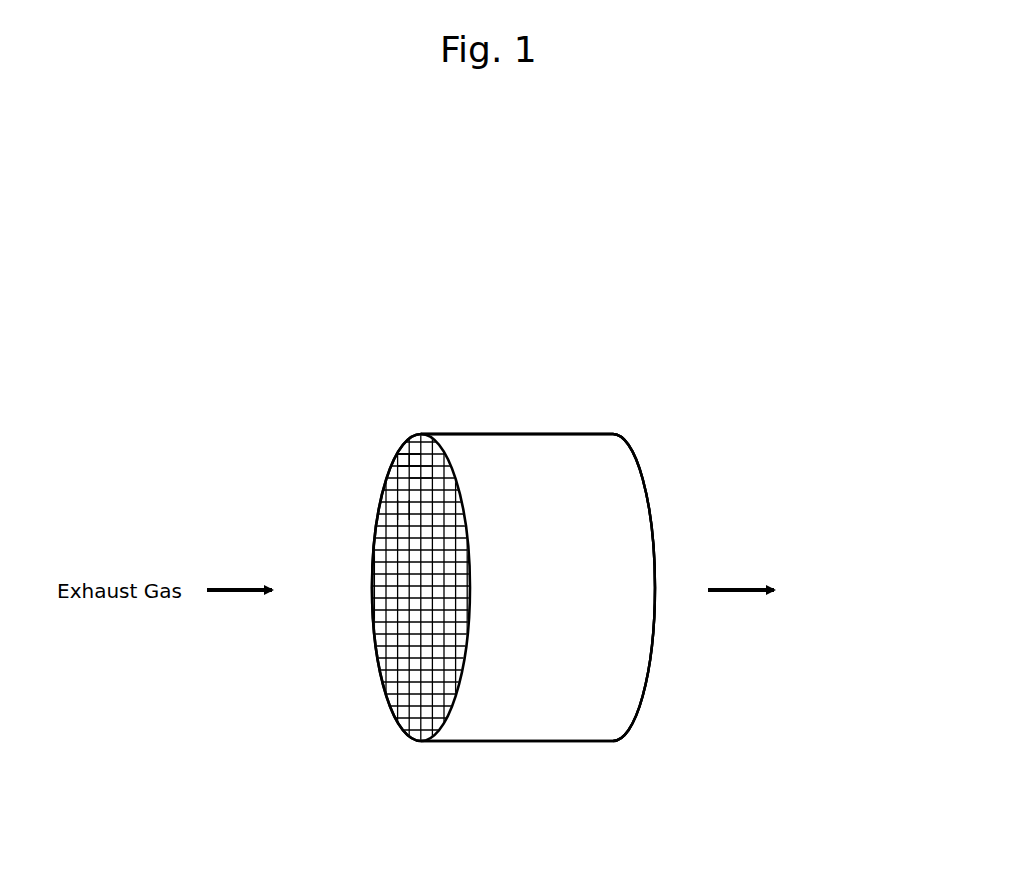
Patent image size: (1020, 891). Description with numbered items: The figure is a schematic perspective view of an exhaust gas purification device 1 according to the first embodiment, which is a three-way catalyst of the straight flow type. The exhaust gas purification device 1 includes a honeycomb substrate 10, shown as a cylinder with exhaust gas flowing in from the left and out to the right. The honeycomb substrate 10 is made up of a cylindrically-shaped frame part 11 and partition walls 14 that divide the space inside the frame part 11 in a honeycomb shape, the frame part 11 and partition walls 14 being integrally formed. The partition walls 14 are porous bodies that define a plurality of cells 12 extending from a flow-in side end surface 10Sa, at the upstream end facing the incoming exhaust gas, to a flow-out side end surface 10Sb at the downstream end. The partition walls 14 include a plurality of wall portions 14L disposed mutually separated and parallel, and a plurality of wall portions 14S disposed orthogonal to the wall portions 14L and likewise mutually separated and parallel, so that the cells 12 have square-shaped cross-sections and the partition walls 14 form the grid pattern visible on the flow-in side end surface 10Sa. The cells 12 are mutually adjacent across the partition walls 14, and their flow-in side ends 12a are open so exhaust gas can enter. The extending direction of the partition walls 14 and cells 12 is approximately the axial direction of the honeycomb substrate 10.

The exhaust gas purification device 1 is at (667, 386).
The honeycomb substrate 10 is at (630, 533).
The flow-in side end surface 10Sa is at (356, 691).
The flow-out side end surface 10Sb is at (667, 697).
The frame part 11 is at (462, 432).
The cell 12 is at (403, 503).
The flow-in side end 12a is at (403, 513).
The partition wall 14 is at (412, 458).
The wall portion 14L is at (412, 458).
The wall portion 14S is at (413, 467).